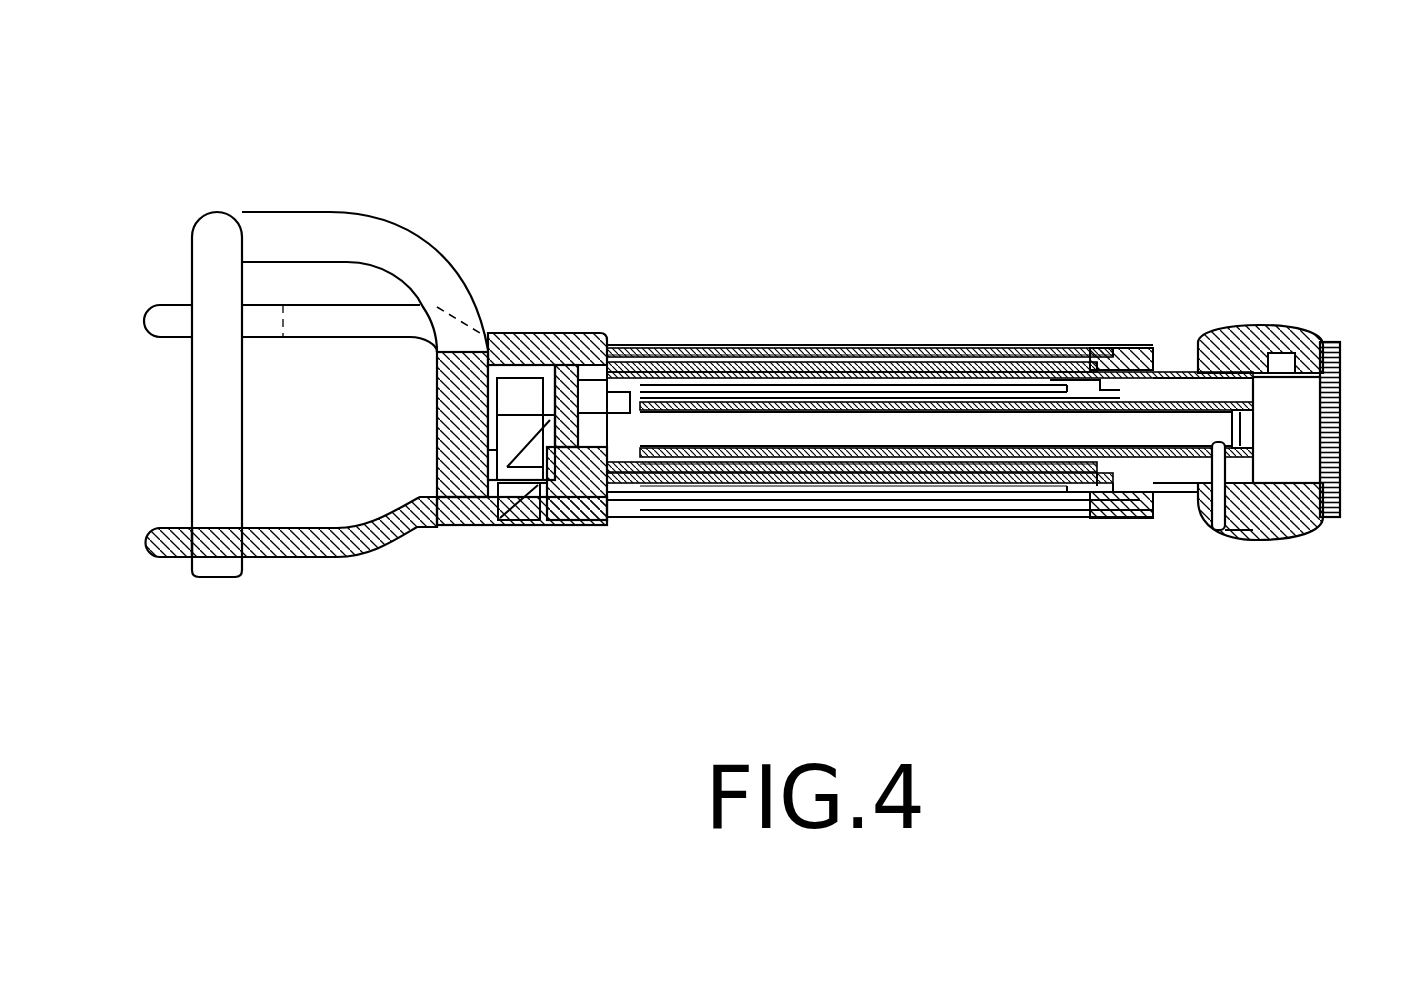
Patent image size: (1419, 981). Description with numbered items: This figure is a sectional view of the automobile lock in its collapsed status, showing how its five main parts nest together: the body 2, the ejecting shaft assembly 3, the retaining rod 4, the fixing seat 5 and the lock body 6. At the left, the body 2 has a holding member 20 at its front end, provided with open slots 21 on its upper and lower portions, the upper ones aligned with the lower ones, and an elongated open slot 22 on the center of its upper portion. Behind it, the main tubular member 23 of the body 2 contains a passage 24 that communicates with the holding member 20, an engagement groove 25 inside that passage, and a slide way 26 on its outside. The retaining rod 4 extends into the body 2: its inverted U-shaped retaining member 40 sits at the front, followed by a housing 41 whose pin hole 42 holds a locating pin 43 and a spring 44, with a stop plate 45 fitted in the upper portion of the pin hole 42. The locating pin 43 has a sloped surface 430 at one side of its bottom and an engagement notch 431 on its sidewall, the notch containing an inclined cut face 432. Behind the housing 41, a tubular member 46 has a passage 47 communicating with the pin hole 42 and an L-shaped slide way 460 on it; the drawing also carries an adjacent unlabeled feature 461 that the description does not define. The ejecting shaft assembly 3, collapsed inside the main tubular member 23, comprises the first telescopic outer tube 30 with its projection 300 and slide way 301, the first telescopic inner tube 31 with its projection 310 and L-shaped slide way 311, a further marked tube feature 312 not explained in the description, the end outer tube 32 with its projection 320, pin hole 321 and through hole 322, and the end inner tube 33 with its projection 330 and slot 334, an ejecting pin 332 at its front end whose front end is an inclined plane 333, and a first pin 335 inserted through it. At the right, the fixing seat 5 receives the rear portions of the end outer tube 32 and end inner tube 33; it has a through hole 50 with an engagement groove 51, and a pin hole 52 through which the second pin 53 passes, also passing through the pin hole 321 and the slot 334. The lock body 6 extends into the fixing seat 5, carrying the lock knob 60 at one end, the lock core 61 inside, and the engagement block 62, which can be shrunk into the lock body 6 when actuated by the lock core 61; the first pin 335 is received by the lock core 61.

The body 2 is at (607, 340).
The ejecting shaft assembly 3 is at (1183, 325).
The retaining rod 4 is at (322, 228).
The fixing seat 5 is at (1213, 340).
The lock body 6 is at (1290, 395).
The holding member 20 is at (332, 557).
The open slots 21 is at (285, 560).
The elongated open slot 22 is at (487, 333).
The main tubular member 23 is at (840, 392).
The passage 24 is at (560, 520).
The engagement groove 25 is at (535, 520).
The slide way 26 is at (898, 518).
The first telescopic outer tube 30 is at (752, 380).
The first telescopic inner tube 31 is at (1012, 505).
The end outer tube 32 is at (1165, 520).
The end inner tube 33 is at (1077, 522).
The inverted U-shaped retaining member 40 is at (218, 232).
The housing 41 is at (505, 335).
The pin hole 42 is at (483, 400).
The locating pin 43 is at (458, 520).
The spring 44 is at (488, 403).
The stop plate 45 is at (490, 335).
The tubular member 46 is at (952, 505).
The passage 47 is at (590, 520).
The through hole 50 is at (1310, 522).
The engagement groove 51 is at (1295, 340).
The pin hole 52 is at (1242, 540).
The second pin 53 is at (1220, 530).
The lock knob 60 is at (1355, 340).
The lock core 61 is at (1245, 425).
The engagement block 62 is at (1280, 340).
The projection 300 is at (630, 520).
The slide way 301 is at (735, 515).
The projection 310 is at (612, 342).
The L-shaped slide way 311 is at (797, 350).
The tube end 312 is at (1065, 348).
The projection 320 is at (755, 518).
The pin hole 321 is at (1200, 530).
The through hole 322 is at (1232, 340).
The projection 330 is at (690, 350).
The ejecting pin 332 is at (600, 520).
The inclined plane 333 is at (540, 335).
The slot 334 is at (1270, 522).
The first pin 335 is at (1273, 522).
The sloped surface 430 is at (482, 520).
The engagement notch 431 is at (548, 520).
The inclined cut face 432 is at (500, 520).
The L-shaped slide way 460 is at (690, 405).
The inner line end 461 is at (1047, 368).